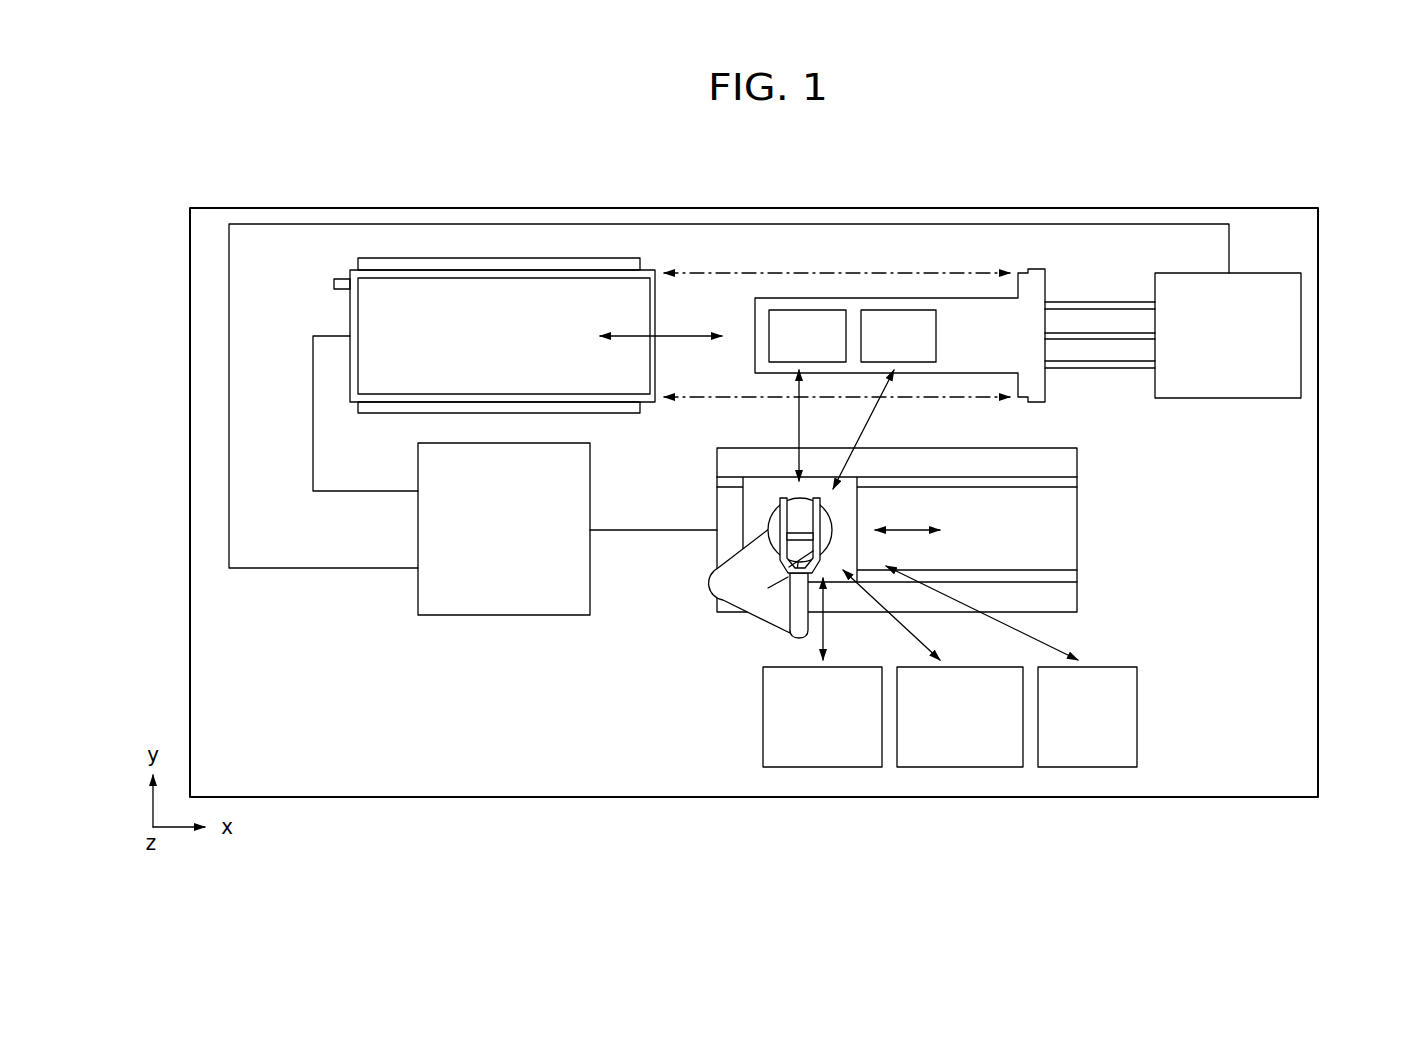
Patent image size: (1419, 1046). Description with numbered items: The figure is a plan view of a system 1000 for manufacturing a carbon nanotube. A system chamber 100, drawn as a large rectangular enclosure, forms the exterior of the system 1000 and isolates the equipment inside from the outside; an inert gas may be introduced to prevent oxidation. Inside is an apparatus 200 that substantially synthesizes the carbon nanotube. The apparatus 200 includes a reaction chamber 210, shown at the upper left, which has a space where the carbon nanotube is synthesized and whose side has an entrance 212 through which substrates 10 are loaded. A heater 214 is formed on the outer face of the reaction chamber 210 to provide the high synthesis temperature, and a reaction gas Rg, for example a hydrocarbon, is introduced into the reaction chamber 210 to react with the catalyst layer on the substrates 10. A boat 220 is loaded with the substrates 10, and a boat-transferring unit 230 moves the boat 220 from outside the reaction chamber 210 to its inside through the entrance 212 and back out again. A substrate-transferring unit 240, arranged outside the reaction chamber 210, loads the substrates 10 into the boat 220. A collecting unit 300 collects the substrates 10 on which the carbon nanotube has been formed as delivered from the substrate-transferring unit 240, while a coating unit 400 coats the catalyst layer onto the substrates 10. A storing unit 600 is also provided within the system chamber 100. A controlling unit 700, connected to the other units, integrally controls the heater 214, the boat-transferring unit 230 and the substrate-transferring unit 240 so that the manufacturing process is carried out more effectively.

The system 1000 is at (1066, 150).
The system chamber 100 is at (1318, 593).
The apparatus 200 is at (1148, 428).
The reaction chamber 210 is at (350, 320).
The entrance 212 is at (655, 308).
The heater 214 is at (418, 262).
The boat 220 is at (960, 298).
The substrates 10 is at (823, 310).
The boat-transferring unit 230 is at (1301, 335).
The substrate-transferring unit 240 is at (1077, 590).
The collecting unit 300 is at (960, 767).
The coating unit 400 is at (1087, 767).
The storing unit 600 is at (822, 767).
The controlling unit 700 is at (510, 615).
The reaction gas Rg is at (322, 284).